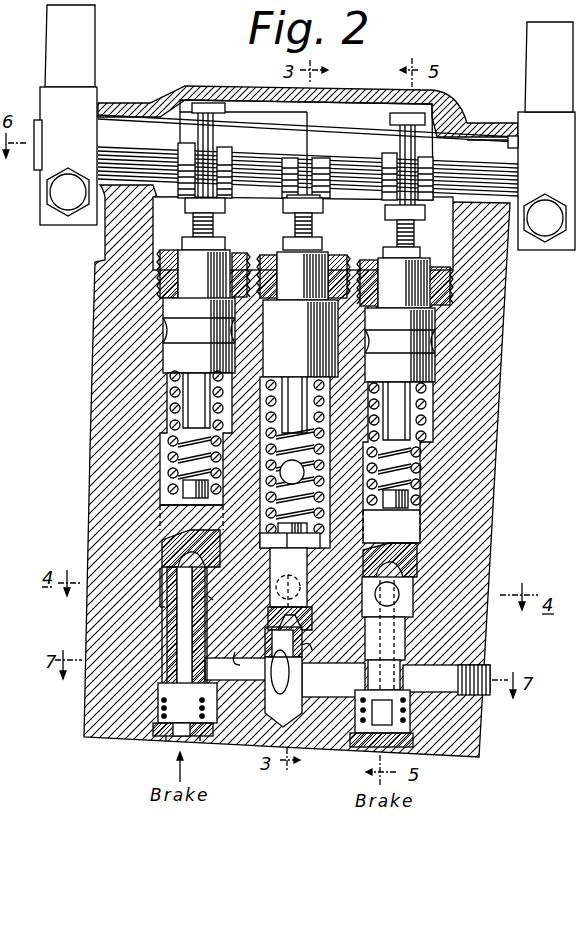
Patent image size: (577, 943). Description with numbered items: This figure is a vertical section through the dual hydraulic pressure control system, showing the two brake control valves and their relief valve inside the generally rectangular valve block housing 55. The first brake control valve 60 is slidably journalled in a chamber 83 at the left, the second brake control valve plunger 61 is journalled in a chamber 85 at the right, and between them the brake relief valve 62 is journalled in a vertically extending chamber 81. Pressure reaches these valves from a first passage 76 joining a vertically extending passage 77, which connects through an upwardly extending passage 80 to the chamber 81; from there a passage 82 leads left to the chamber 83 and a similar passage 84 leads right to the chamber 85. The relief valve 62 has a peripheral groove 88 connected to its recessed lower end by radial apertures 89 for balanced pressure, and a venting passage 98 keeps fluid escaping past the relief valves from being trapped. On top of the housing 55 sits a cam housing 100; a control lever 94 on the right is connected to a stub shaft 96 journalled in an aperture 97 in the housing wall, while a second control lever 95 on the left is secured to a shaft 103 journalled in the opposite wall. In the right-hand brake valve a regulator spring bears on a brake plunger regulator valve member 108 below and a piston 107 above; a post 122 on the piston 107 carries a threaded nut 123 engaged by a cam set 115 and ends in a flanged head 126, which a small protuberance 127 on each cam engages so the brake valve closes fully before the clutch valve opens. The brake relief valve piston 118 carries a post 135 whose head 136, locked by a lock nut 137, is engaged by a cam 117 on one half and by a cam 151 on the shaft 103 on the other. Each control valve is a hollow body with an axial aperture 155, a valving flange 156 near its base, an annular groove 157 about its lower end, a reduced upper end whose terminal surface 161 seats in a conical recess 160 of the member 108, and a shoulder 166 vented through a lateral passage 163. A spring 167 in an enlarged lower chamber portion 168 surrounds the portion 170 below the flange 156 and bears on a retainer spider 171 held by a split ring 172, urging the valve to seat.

The valve block housing 55 is at (497, 420).
The brake control valve 60 is at (160, 626).
The brake control valve 61 is at (405, 636).
The brake relief valve 62 is at (282, 584).
The first passage 76 is at (282, 601).
The vertically extending passage 77 is at (302, 600).
The upwardly extending passage 80 is at (302, 673).
The brake relief valve chamber 81 is at (287, 712).
The passage 82 is at (237, 652).
The chamber 83 is at (163, 606).
The second passage 84 is at (308, 655).
The chamber 85 is at (396, 604).
The peripheral groove 88 is at (305, 642).
The radial apertures 89 is at (236, 669).
The control lever 94 is at (540, 37).
The control lever 95 is at (58, 35).
The stub shaft 96 is at (495, 135).
The aperture 97 is at (519, 144).
The venting passage 98 is at (303, 477).
The cam housing 100 is at (214, 90).
The shaft 103 is at (123, 127).
The piston 107 is at (168, 358).
The brake plunger regulator valve member 108 is at (180, 508).
The cam set 115 is at (385, 215).
The cam 117 is at (320, 160).
The piston 118 is at (300, 314).
The post 122 is at (418, 245).
The nut 123 is at (415, 228).
The flanged head 126 is at (400, 110).
The protuberance 127 is at (425, 157).
The post 135 is at (294, 232).
The head 136 is at (280, 210).
The lock nut 137 is at (328, 255).
The cam 151 is at (291, 158).
The axially extending aperture 155 is at (180, 640).
The valving flange 156 is at (412, 711).
The annular groove 157 is at (404, 682).
The conical recess 160 is at (172, 552).
The upper terminal surface 161 is at (175, 563).
The laterally extending passage 163 is at (158, 597).
The shoulder 166 is at (210, 598).
The spring 167 is at (158, 709).
The enlarged lower end portion 168 is at (152, 737).
The valve portion 170 is at (414, 728).
The retainer spider 171 is at (165, 738).
The split ring 172 is at (201, 740).